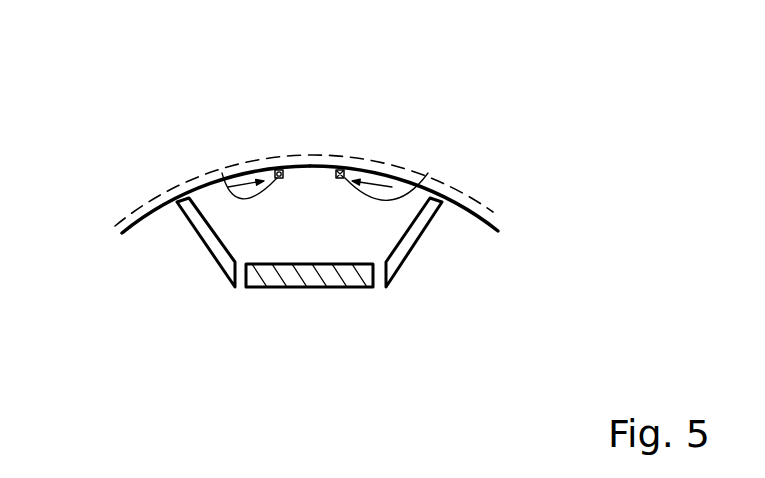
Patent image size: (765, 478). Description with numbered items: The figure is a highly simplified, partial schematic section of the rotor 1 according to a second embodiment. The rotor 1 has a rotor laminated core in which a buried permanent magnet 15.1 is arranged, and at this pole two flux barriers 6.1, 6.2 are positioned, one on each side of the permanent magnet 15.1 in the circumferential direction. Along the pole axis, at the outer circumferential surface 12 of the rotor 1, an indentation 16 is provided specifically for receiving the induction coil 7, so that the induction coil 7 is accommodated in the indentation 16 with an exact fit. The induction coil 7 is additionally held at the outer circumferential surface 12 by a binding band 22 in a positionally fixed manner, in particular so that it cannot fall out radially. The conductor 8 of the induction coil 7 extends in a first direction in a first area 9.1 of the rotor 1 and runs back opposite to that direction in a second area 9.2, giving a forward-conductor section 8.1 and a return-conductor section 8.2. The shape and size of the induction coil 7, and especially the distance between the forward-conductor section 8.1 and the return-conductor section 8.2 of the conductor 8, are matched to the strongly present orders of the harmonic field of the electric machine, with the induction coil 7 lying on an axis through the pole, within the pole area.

The rotor 1 is at (427, 273).
The flux barrier 6.1 is at (198, 227).
The flux barrier 6.2 is at (413, 228).
The induction coil 7 is at (358, 157).
The conductor 8 is at (331, 132).
The forward-conductor section 8.1 is at (190, 192).
The return-conductor section 8.2 is at (472, 207).
The first area 9.1 is at (279, 168).
The second area 9.2 is at (340, 168).
The outer circumferential surface 12 is at (490, 222).
The permanent magnet 15.1 is at (333, 273).
The indentation 16 is at (222, 173).
The binding band 22 is at (473, 202).